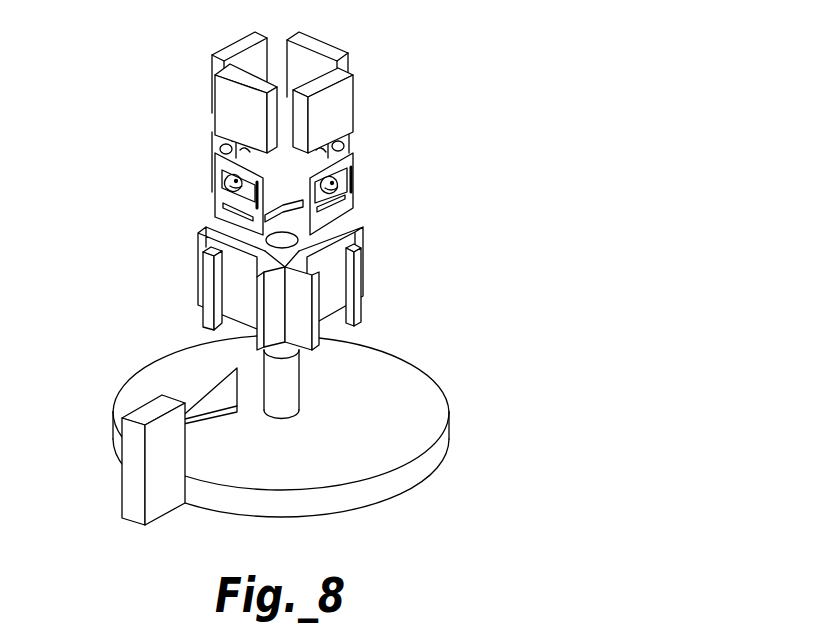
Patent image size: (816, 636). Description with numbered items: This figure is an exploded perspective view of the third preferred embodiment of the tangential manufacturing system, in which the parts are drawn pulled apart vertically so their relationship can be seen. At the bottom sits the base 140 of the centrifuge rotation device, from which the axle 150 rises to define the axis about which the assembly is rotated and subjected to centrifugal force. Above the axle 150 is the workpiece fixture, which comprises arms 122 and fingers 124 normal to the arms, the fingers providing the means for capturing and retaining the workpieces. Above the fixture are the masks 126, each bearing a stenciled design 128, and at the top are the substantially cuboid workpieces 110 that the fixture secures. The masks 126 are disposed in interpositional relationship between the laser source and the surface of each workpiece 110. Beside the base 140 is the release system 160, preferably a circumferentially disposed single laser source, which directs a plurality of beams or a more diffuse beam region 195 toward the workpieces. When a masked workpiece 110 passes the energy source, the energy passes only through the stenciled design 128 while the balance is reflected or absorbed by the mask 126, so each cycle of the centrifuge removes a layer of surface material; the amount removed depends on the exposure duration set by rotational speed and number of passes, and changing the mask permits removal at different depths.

The workpiece 110 is at (245, 42).
The arm 122 is at (202, 240).
The finger 124 is at (202, 320).
The mask 126 is at (353, 193).
The stenciled design 128 is at (217, 203).
The base 140 is at (398, 400).
The axle 150 is at (282, 377).
The release system 160 is at (135, 462).
The beam region 195 is at (200, 407).